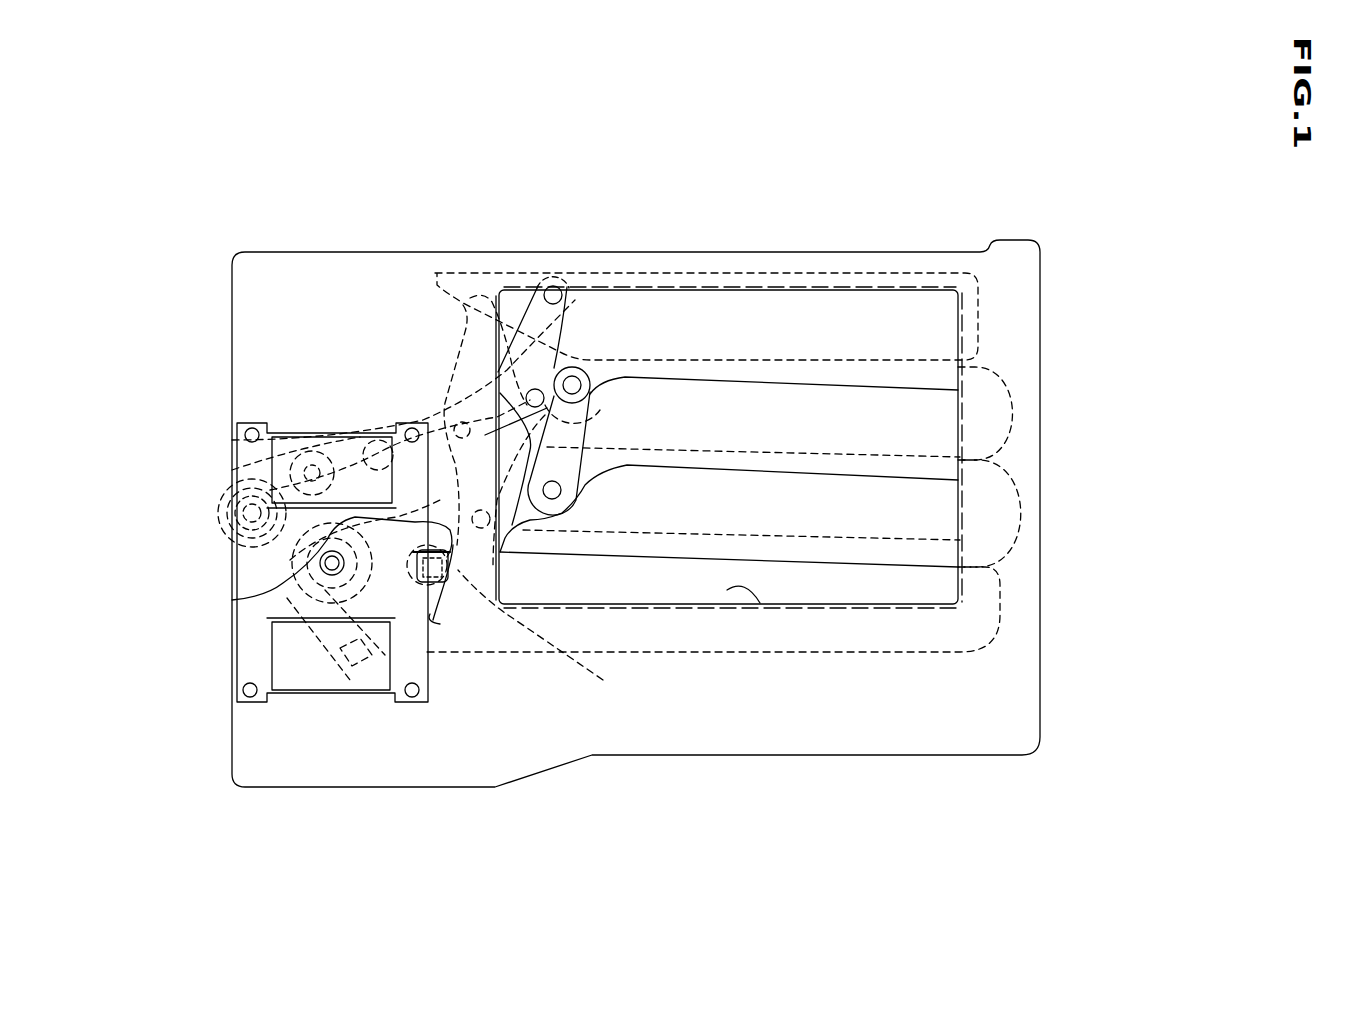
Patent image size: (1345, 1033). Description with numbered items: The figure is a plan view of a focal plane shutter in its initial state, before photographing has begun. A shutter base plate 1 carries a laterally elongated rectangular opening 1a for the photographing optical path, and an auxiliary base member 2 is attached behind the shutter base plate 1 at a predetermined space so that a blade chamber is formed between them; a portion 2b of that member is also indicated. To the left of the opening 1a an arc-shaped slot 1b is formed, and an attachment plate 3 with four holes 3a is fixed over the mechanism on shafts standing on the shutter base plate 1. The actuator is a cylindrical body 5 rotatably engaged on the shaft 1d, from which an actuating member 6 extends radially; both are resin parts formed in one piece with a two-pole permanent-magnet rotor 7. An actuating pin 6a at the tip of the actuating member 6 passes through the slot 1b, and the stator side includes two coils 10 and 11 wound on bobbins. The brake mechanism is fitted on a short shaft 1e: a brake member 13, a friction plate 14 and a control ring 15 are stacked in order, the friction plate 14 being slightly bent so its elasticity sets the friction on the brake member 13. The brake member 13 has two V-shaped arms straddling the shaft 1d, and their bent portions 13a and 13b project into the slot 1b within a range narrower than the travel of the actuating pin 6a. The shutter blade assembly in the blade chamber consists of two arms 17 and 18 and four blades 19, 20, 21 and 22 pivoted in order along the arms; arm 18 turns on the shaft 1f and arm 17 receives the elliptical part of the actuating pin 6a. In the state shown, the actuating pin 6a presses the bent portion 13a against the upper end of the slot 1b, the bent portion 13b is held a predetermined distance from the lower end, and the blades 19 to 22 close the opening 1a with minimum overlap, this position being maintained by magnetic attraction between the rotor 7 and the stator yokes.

The shutter base plate 1 is at (646, 478).
The auxiliary base member 2 is at (1010, 252).
The opening 1a is at (860, 300).
The arc-shaped slot 1b is at (440, 617).
The shaft 1d is at (242, 598).
The short shaft 1e is at (233, 513).
The shaft 1f is at (314, 463).
The holder bottom 2b is at (723, 605).
The attachment plate 3 is at (322, 551).
The holes 3a is at (403, 430).
The cylindrical body 5 is at (247, 580).
The actuating member 6 is at (233, 567).
The actuating pin 6a is at (547, 640).
The rotor 7 is at (230, 537).
The coil 10 is at (288, 445).
The coil 11 is at (292, 685).
The brake member 13 is at (245, 458).
The bent portion 13a is at (505, 572).
The bent portion 13b is at (357, 683).
The friction plate 14 is at (247, 493).
The control ring 15 is at (237, 507).
The arm 17 is at (583, 428).
The arm 18 is at (565, 300).
The blade 19 is at (990, 590).
The blade 20 is at (1000, 497).
The blade 21 is at (1000, 400).
The blade 22 is at (975, 330).